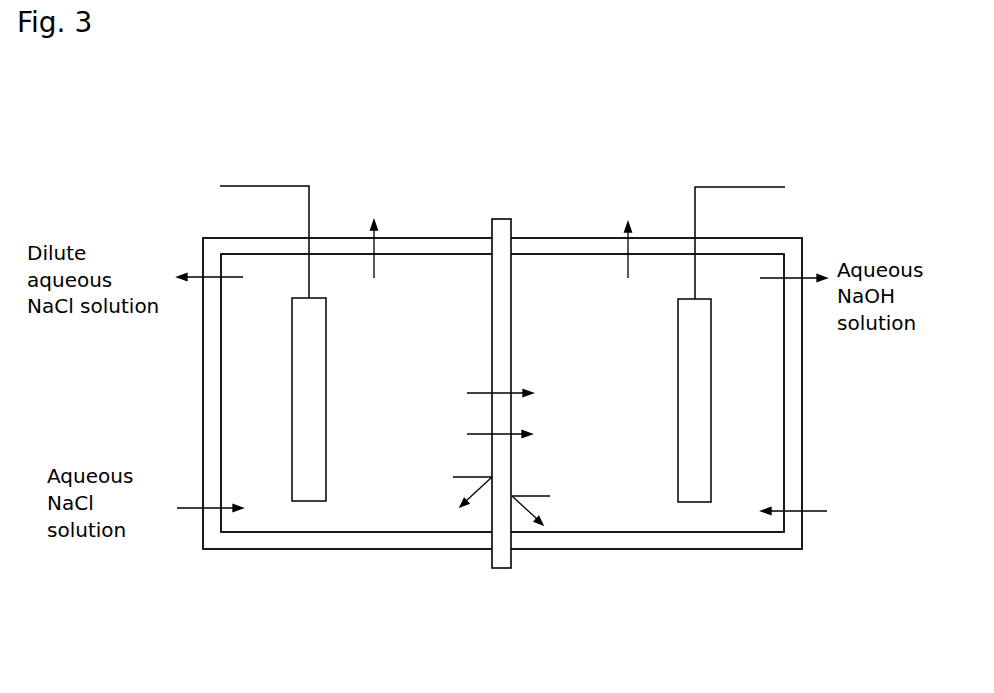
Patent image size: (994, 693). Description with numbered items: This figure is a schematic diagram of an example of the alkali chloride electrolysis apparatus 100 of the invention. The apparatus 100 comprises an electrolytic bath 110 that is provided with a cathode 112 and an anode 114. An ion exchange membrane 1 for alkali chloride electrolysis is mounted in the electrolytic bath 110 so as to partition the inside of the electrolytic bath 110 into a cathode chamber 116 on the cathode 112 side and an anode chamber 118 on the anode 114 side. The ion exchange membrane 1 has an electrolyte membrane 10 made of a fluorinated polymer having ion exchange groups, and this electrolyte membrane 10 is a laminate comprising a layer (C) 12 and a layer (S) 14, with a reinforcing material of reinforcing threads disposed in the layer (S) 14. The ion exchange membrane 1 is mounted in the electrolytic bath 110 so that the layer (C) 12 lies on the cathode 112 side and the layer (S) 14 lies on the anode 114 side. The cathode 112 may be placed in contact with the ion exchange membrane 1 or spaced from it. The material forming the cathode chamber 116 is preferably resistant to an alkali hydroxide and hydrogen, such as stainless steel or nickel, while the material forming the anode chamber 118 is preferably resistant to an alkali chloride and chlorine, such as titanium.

The alkali chloride electrolysis apparatus 100 is at (425, 151).
The electrolyte membrane 10 is at (500, 211).
The ion exchange membrane 1 is at (500, 580).
The layer (C) 12 is at (513, 345).
The layer (S) 14 is at (492, 302).
The electrolytic bath 110 is at (287, 549).
The anode chamber 118 is at (394, 513).
The cathode chamber 116 is at (645, 514).
The anode 114 is at (292, 386).
The cathode 112 is at (712, 376).